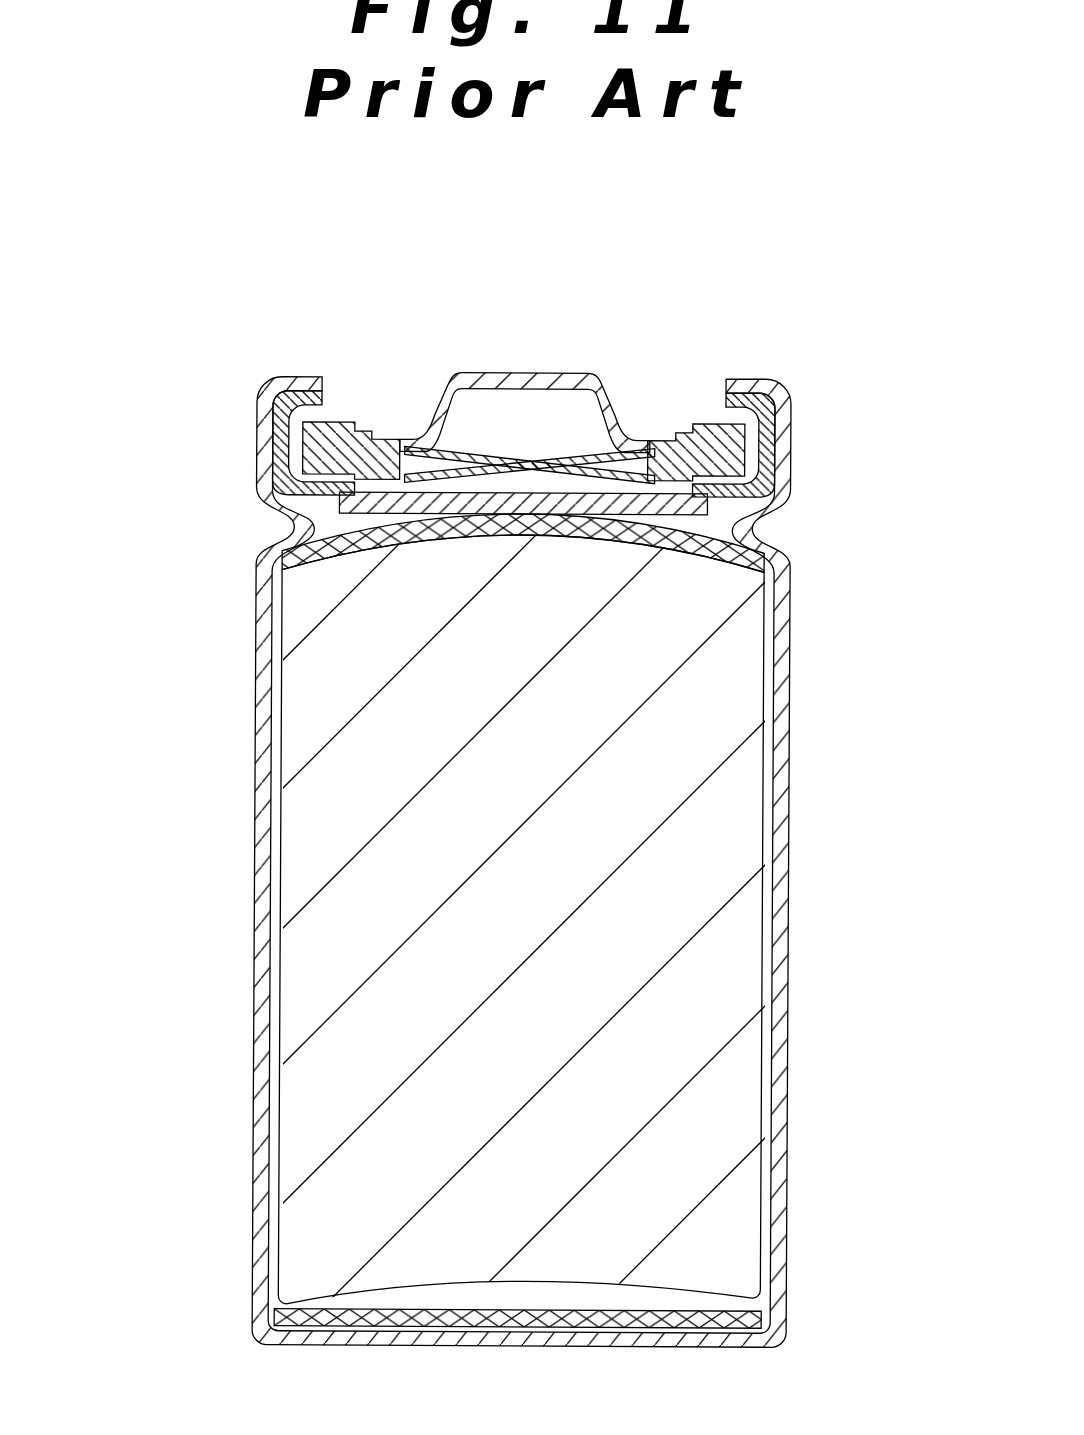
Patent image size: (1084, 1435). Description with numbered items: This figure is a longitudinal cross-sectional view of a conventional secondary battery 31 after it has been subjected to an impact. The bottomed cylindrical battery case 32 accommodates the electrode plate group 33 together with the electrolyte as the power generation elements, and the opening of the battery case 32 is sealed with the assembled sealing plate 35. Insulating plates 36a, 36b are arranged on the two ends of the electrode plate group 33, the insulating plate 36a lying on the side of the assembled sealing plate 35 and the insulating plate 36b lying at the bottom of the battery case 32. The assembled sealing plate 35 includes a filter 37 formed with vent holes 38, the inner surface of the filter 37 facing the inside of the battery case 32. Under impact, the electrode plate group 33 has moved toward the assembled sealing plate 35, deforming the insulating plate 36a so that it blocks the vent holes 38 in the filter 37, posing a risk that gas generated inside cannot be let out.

The secondary battery 31 is at (232, 620).
The battery case 32 is at (265, 872).
The electrode plate group 33 is at (555, 898).
The assembled sealing plate 35 is at (630, 375).
The insulating plate 36a is at (655, 540).
The insulating plate 36b is at (690, 1312).
The filter 37 is at (395, 498).
The vent holes 38 is at (440, 510).